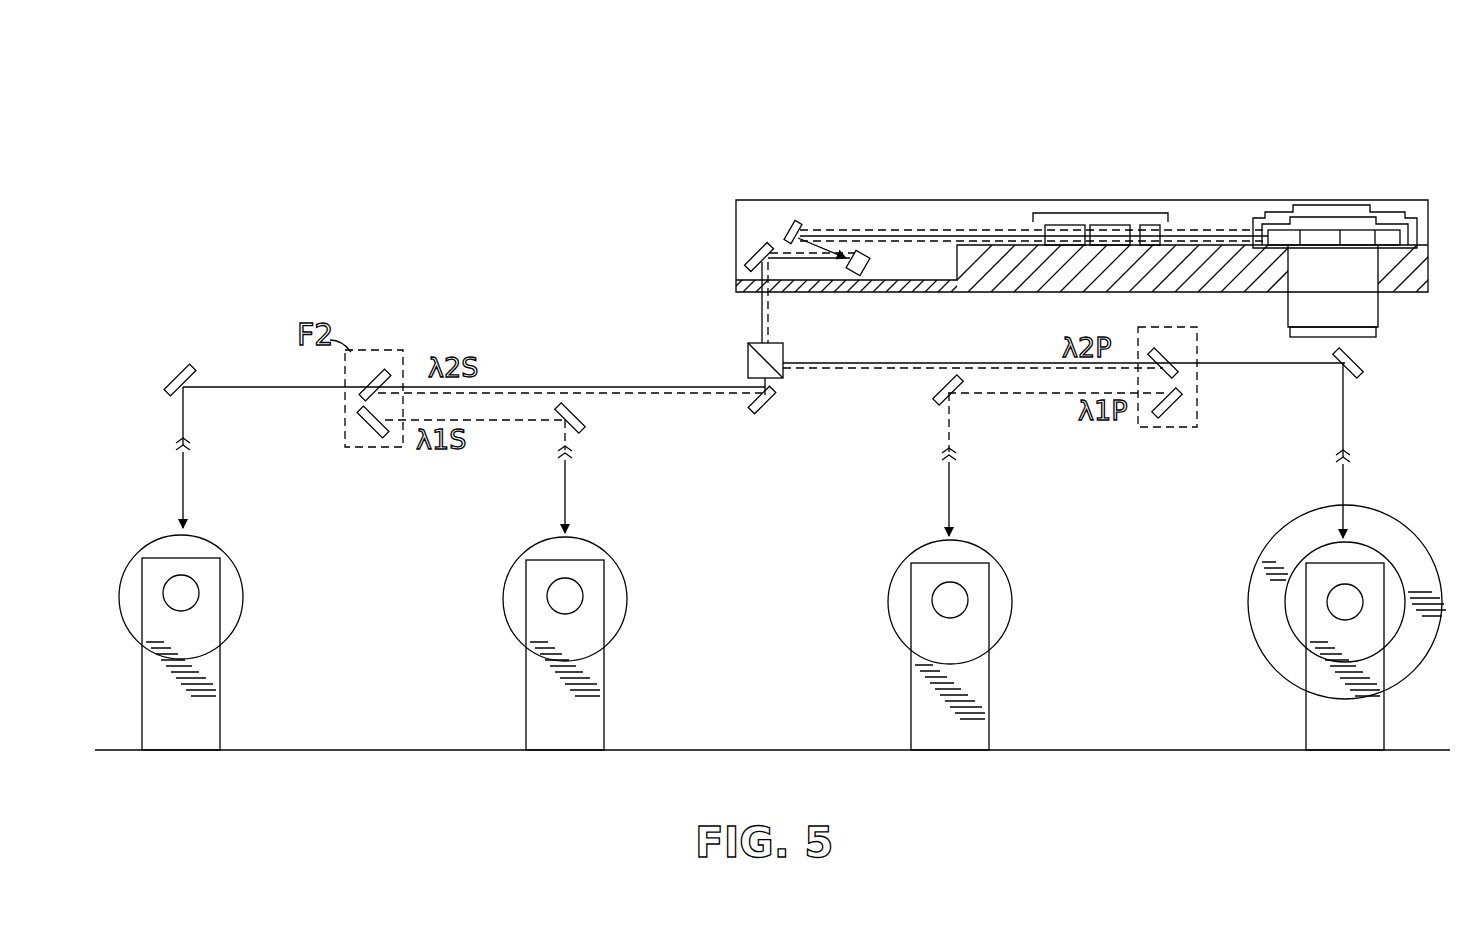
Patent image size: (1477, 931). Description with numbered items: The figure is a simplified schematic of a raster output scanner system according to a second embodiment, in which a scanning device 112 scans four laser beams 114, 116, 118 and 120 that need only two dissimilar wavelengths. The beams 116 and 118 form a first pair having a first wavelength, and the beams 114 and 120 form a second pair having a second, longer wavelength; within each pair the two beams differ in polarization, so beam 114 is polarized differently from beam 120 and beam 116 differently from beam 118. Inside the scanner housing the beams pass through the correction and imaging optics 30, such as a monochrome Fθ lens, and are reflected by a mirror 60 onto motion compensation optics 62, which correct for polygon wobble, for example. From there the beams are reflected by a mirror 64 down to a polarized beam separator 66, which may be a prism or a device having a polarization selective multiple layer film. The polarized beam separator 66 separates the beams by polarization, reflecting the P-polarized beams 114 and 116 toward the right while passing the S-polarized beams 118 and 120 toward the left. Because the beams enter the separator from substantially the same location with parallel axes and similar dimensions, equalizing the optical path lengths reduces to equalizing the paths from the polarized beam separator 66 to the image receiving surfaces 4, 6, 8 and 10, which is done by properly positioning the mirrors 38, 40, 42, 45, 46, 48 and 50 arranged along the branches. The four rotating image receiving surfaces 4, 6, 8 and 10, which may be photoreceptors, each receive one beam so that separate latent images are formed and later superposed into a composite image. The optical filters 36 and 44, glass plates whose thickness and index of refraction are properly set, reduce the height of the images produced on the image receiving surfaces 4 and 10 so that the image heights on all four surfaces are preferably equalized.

The image receiving surface 4 is at (243, 587).
The image receiving surface 6 is at (627, 590).
The image receiving surface 8 is at (1012, 592).
The image receiving surface 10 is at (1403, 578).
The correction and imaging optics 30 is at (1100, 213).
The optical filter 36 is at (1176, 352).
The mirror 38 is at (1360, 375).
The mirror 40 is at (1180, 409).
The mirror 42 is at (936, 398).
The optical filter 44 is at (384, 370).
The mirror 45 is at (772, 408).
The mirror 46 is at (176, 368).
The mirror 48 is at (366, 437).
The mirror 50 is at (585, 414).
The mirror 60 is at (786, 222).
The motion compensation optics 62 is at (856, 252).
The mirror 64 is at (750, 255).
The polarized beam separator 66 is at (746, 358).
The device 112 is at (1378, 320).
The laser beam 114 is at (1298, 368).
The laser beam 116 is at (986, 395).
The laser beam 118 is at (530, 422).
The laser beam 120 is at (183, 497).